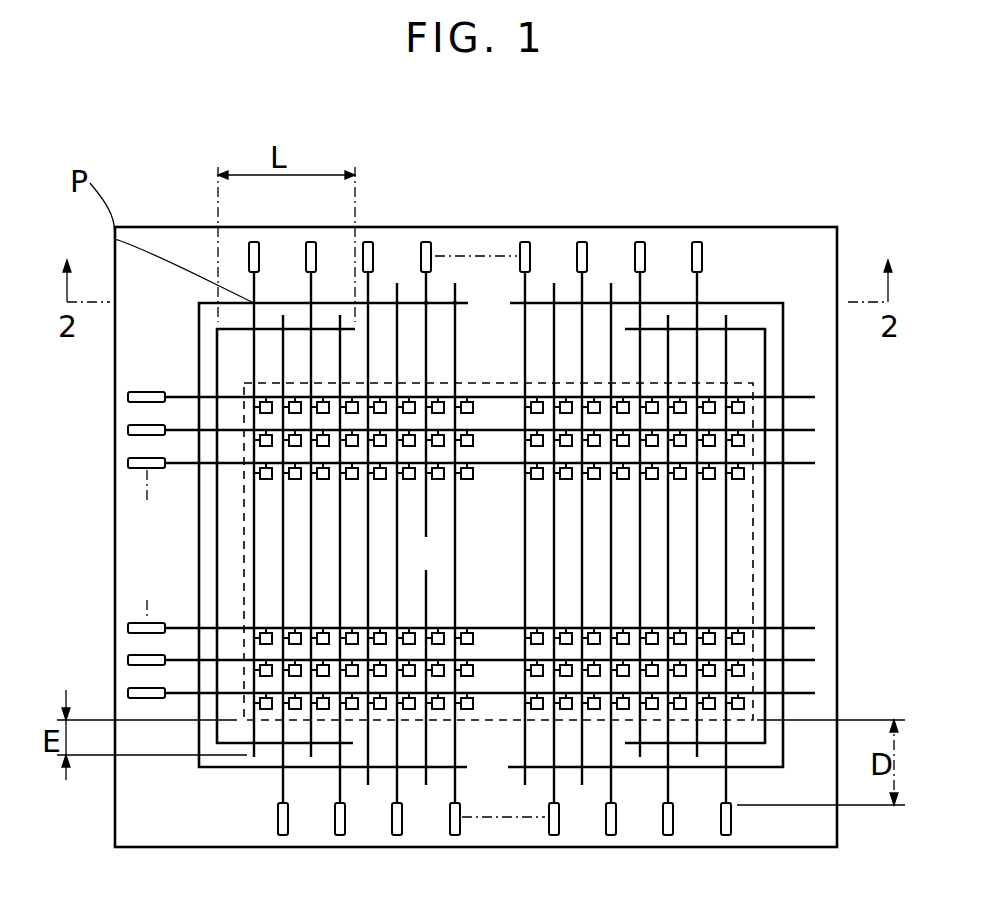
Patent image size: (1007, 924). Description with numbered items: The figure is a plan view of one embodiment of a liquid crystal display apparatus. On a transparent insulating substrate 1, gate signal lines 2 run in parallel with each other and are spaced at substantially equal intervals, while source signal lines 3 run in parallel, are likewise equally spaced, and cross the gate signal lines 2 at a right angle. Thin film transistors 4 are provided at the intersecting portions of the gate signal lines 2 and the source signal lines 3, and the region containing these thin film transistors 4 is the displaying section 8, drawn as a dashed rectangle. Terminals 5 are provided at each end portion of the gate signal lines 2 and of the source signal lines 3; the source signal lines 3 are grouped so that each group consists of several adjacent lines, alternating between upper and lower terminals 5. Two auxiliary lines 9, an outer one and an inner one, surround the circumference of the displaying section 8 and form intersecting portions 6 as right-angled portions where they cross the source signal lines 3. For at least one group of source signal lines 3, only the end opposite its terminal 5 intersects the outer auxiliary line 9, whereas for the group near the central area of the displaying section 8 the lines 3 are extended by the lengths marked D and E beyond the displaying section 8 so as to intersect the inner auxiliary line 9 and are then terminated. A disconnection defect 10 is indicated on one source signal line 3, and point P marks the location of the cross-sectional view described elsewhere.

The transparent insulating substrate 1 is at (164, 243).
The gate signal lines 2 is at (795, 397).
The source signal lines 3 is at (697, 283).
The thin film transistors 4 is at (738, 638).
The terminals 5 is at (426, 240).
The intersecting portions 6 is at (426, 303).
The displaying section 8 is at (757, 518).
The auxiliary line 9 is at (217, 540).
The disconnection defect 10 is at (414, 553).